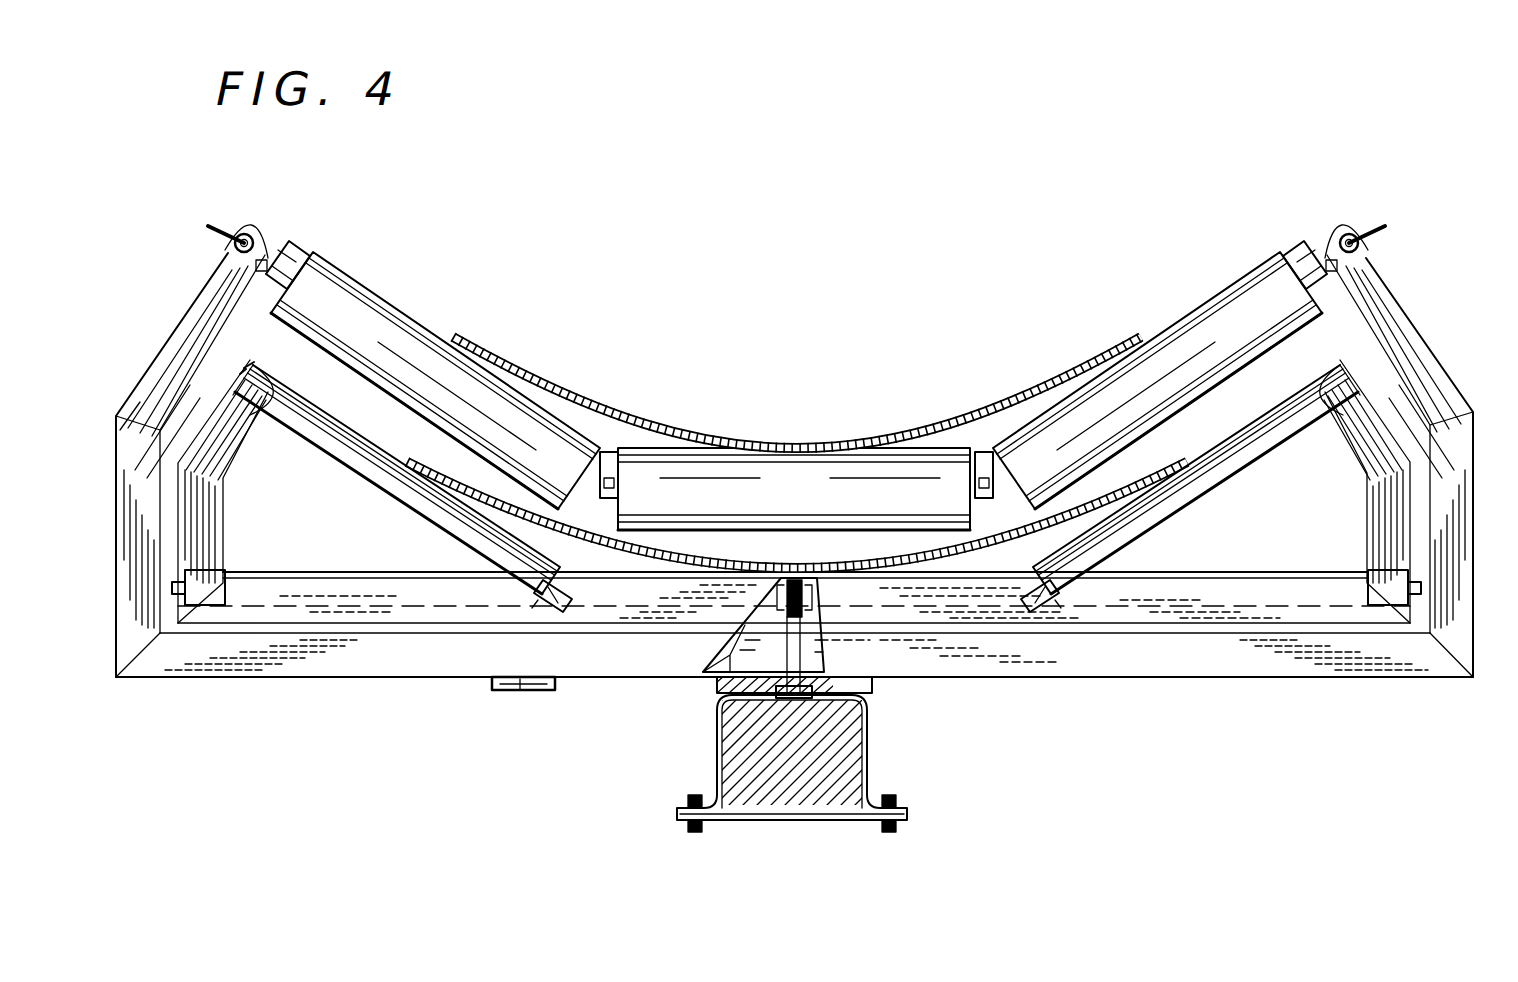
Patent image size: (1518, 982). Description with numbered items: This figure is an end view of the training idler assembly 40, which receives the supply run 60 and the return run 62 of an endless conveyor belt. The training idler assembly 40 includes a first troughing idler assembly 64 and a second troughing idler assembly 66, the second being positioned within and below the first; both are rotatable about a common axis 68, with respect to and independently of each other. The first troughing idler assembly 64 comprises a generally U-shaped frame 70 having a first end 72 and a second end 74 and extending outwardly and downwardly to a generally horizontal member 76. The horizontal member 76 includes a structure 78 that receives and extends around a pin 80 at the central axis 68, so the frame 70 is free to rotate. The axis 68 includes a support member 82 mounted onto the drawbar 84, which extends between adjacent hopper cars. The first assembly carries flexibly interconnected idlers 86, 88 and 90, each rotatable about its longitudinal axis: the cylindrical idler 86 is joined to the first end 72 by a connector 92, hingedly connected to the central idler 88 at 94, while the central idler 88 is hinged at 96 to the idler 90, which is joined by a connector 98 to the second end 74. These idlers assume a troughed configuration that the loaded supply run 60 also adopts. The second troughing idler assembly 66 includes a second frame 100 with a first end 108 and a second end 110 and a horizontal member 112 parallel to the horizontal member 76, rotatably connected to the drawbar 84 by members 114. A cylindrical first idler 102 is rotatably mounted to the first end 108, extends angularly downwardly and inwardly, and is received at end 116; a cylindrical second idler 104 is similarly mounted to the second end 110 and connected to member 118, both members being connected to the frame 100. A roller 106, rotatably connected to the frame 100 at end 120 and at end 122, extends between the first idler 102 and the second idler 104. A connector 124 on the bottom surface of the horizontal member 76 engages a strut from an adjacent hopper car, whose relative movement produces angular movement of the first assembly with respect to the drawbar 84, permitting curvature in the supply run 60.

The training idler assembly 40 is at (970, 320).
The supply run 60 is at (548, 387).
The return run 62 is at (734, 561).
The first troughing idler assembly 64 is at (392, 303).
The second troughing idler assembly 66 is at (372, 455).
The common axis 68 is at (865, 695).
The frame 70 is at (202, 310).
The first end 72 is at (258, 236).
The second end 74 is at (1337, 233).
The horizontal member 76 is at (370, 668).
The structure 78 is at (827, 660).
The pin 80 is at (782, 648).
The support member 82 is at (715, 690).
The drawbar 84 is at (877, 757).
The idler 86 is at (412, 387).
The central idler 88 is at (782, 502).
The idler 90 is at (1145, 387).
The connector 92 is at (296, 258).
The hinged connection 94 is at (609, 460).
The hinged connection 96 is at (985, 460).
The connector 98 is at (1300, 257).
The second frame 100 is at (216, 540).
The first idler 102 is at (408, 503).
The second idler 104 is at (1230, 477).
The roller 106 is at (413, 568).
The first end 108 is at (236, 392).
The second end 110 is at (1330, 365).
The horizontal member 112 is at (370, 609).
The members 114 is at (812, 592).
The end 116 is at (544, 612).
The member 118 is at (1048, 612).
The end 120 is at (212, 568).
The end 122 is at (1417, 587).
The connector 124 is at (510, 690).